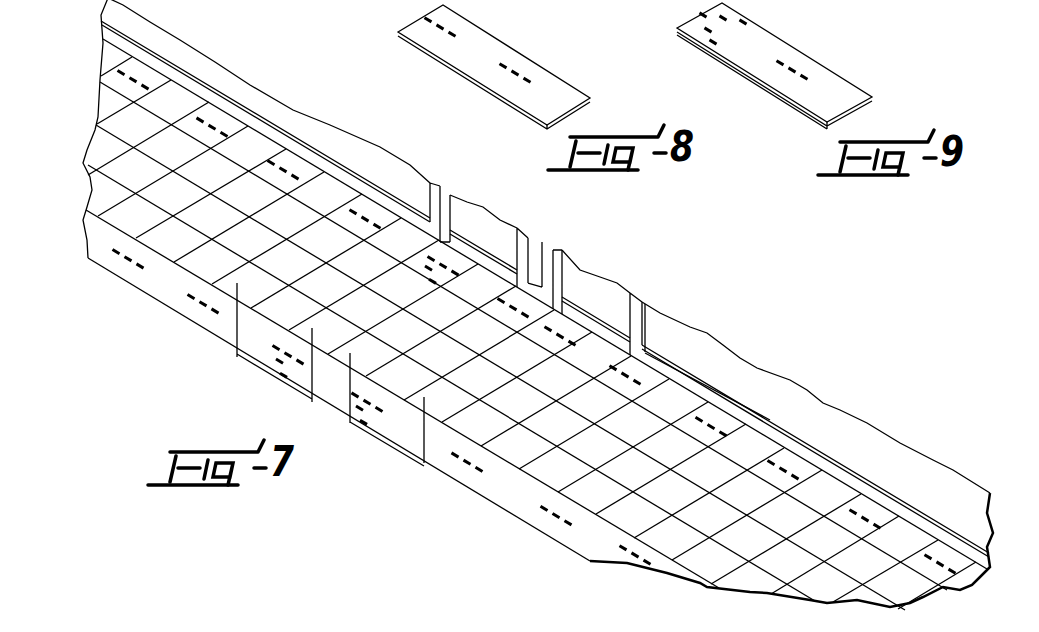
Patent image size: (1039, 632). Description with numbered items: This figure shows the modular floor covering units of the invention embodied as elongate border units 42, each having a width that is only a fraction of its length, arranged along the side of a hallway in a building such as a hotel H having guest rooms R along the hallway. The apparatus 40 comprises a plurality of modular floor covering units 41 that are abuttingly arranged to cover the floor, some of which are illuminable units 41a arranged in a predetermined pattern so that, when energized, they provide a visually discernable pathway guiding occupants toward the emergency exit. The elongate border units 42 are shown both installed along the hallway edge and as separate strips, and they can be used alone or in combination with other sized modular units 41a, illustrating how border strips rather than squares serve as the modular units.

In FIG. 7, the apparatus 40 is at (441, 471).
In FIG. 7, the modular floor covering unit 41 is at (517, 444).
In FIG. 7, the illuminable unit 41a is at (265, 355).
In FIG. 7, the elongate border unit 42 is at (173, 97).
In FIG. 8, the elongate border unit 42 is at (482, 50).
In FIG. 9, the elongate border unit 42 is at (777, 46).
In FIG. 7, the guest room R is at (453, 220).
In FIG. 7, the hotel H is at (678, 322).